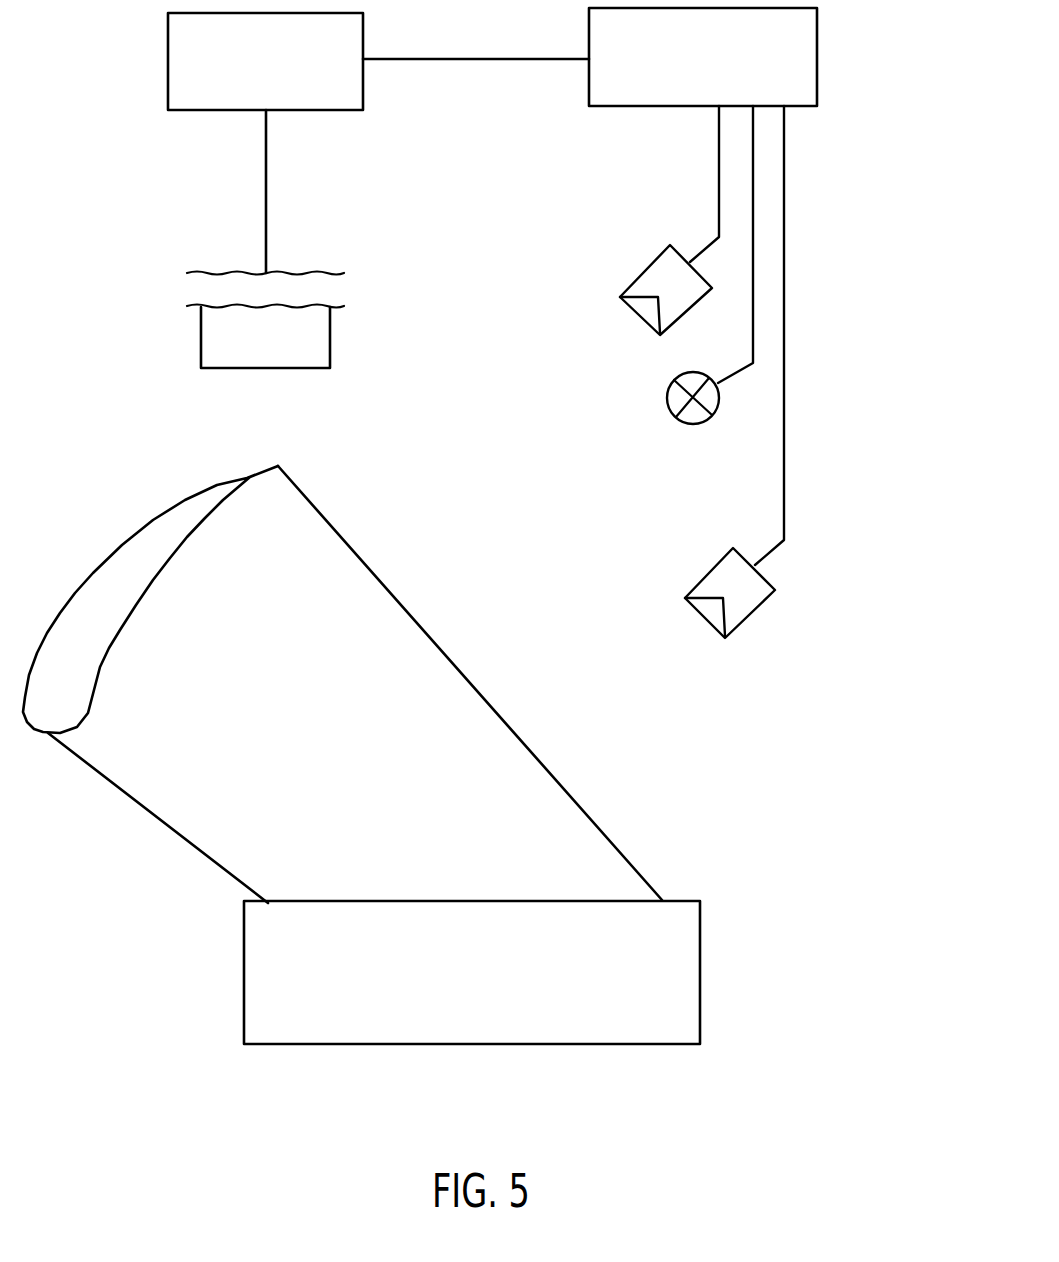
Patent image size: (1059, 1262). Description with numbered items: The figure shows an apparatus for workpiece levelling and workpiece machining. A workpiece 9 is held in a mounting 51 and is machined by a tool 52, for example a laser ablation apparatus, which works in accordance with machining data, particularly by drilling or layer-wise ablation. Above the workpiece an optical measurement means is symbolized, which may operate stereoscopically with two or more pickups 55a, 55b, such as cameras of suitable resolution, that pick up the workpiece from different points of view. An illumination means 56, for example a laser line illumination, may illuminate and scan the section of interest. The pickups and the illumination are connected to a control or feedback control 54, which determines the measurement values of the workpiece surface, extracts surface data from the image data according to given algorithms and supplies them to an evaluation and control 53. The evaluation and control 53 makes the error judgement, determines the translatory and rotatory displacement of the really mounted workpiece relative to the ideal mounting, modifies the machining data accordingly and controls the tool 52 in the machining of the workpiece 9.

The workpiece 9 is at (147, 778).
The mounting 51 is at (265, 990).
The tool 52 is at (222, 338).
The evaluation and control 53 is at (188, 72).
The control or feedback control 54 is at (802, 40).
The pickup 55a is at (660, 273).
The pickup 55b is at (727, 578).
The illumination means 56 is at (678, 400).